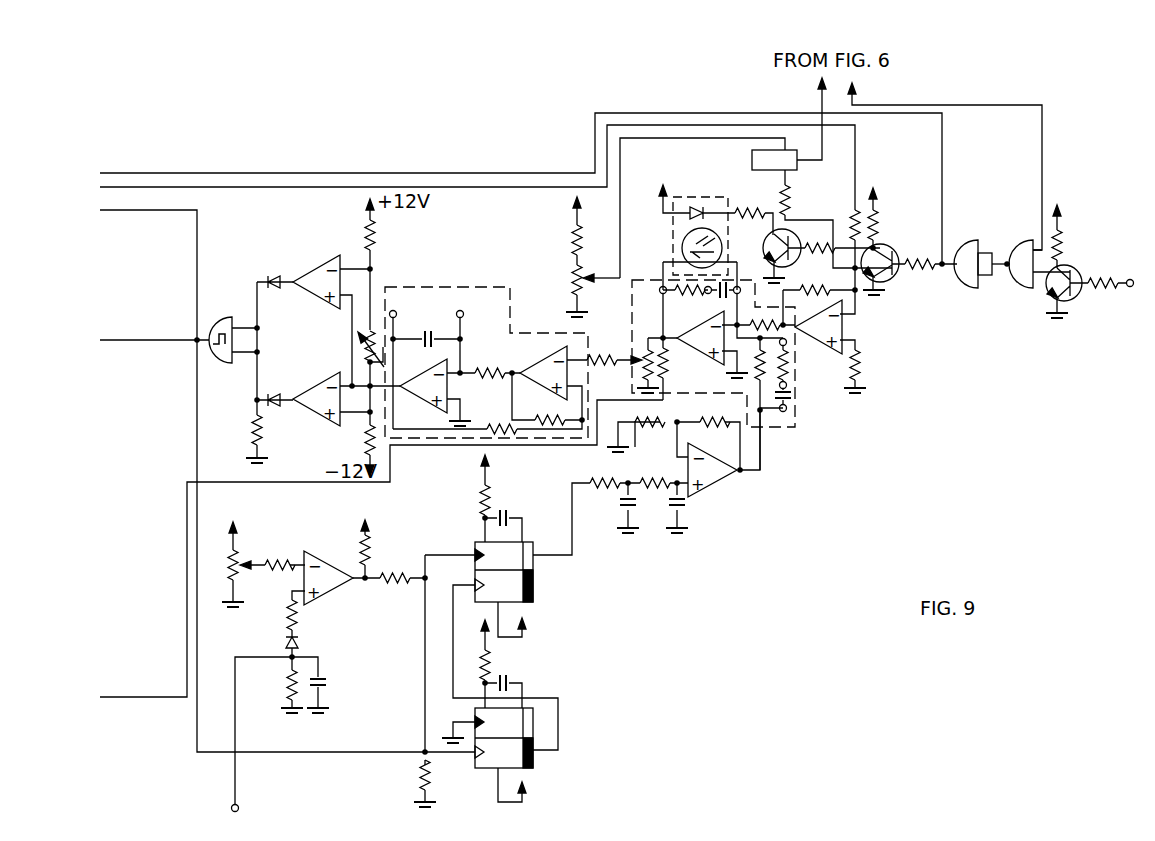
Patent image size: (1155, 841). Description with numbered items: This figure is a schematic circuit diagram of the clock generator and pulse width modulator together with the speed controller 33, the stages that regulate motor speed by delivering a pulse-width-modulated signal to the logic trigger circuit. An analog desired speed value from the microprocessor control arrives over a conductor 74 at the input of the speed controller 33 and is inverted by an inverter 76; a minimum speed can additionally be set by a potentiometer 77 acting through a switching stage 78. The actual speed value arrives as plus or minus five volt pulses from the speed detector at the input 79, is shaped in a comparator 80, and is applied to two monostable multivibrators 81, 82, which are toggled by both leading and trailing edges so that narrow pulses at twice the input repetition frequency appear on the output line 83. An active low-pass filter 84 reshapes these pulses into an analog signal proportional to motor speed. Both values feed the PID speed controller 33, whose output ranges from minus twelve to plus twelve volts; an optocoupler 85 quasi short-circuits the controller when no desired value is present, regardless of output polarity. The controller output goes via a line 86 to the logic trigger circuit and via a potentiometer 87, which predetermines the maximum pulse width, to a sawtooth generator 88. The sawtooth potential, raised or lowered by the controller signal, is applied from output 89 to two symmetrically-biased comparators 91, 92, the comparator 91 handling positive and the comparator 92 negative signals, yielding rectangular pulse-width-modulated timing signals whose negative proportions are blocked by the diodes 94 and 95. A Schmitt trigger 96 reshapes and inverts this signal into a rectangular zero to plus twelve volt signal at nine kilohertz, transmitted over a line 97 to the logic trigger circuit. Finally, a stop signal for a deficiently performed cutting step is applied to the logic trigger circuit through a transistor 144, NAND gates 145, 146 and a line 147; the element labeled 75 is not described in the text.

The line 147 is at (145, 172).
The conductor 74 is at (274, 187).
The line 97 is at (143, 341).
The line 86 is at (135, 696).
The Schmitt trigger 96 is at (222, 326).
The diode 94 is at (272, 274).
The diode 95 is at (274, 396).
The comparator 91 is at (320, 267).
The comparator 92 is at (320, 414).
The sawtooth generator 88 is at (454, 287).
The output 89 is at (405, 400).
The potentiometer 77 is at (572, 274).
The switching stage 78 is at (752, 160).
The optocoupler 85 is at (714, 192).
The speed controller 33 is at (645, 280).
The potentiometer 87 is at (640, 378).
The inverter 76 is at (819, 340).
The transistor 75 is at (857, 159).
The NAND gate 146 is at (958, 244).
The NAND gate 145 is at (1012, 244).
The transistor 144 is at (1052, 294).
The active low-pass filter 84 is at (722, 480).
The output line 83 is at (574, 531).
The monostable multivibrator 81 is at (538, 591).
The monostable multivibrator 82 is at (512, 724).
The comparator 80 is at (331, 589).
The input 79 is at (240, 806).